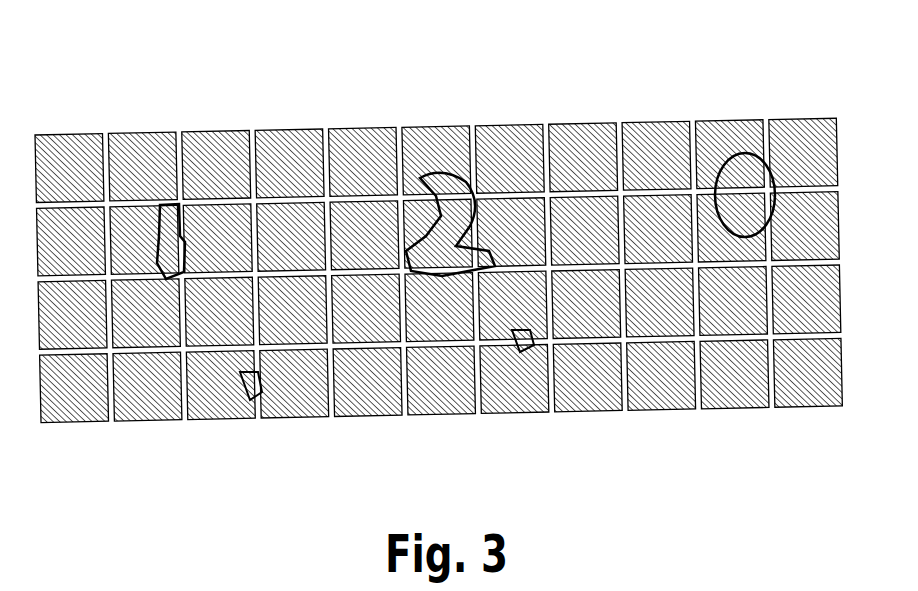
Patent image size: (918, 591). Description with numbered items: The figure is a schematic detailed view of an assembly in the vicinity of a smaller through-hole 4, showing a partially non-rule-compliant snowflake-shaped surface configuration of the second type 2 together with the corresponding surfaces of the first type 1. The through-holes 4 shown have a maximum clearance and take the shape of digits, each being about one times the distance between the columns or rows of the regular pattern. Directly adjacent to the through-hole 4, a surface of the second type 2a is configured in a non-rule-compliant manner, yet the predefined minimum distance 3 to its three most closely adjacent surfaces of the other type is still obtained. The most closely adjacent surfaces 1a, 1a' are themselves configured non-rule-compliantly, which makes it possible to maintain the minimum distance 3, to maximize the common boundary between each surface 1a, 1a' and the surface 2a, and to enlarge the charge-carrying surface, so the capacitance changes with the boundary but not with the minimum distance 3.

The surfaces of the first type 1 is at (722, 378).
The non-rule-compliant first-type surface most closely adjacent to surface 2a 1a is at (68, 124).
The non-rule-compliant first-type surface most closely adjacent to surface 2a 1a' is at (149, 124).
The surface of the second type adjacent to the through-hole 2a is at (177, 190).
The surface configuration of the second type 2 is at (620, 122).
The predefined minimum distance 3 is at (250, 137).
The through-hole 4 is at (522, 338).